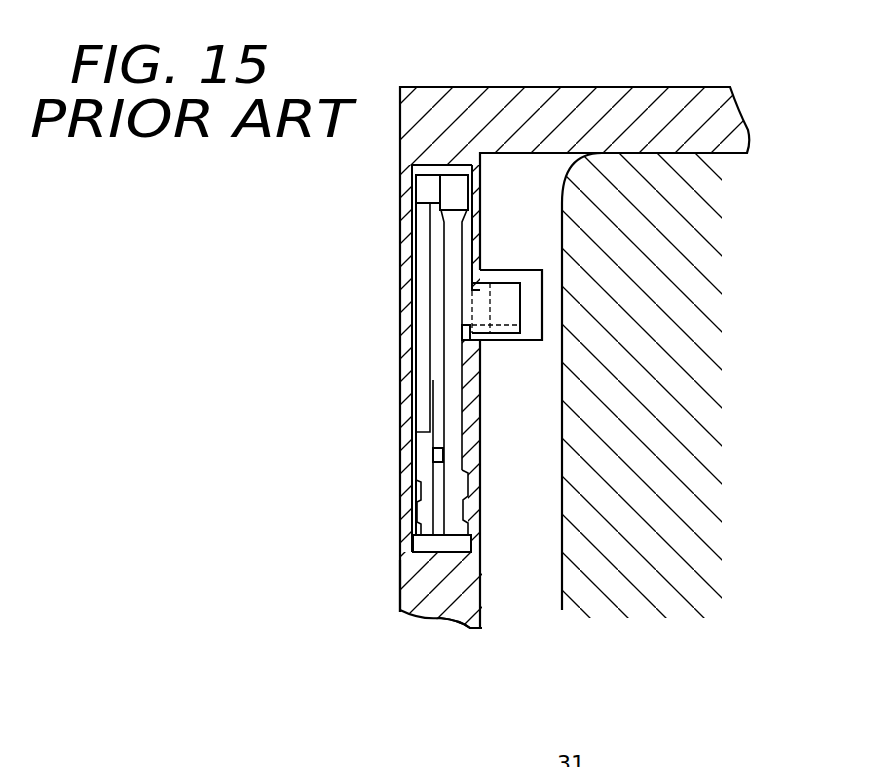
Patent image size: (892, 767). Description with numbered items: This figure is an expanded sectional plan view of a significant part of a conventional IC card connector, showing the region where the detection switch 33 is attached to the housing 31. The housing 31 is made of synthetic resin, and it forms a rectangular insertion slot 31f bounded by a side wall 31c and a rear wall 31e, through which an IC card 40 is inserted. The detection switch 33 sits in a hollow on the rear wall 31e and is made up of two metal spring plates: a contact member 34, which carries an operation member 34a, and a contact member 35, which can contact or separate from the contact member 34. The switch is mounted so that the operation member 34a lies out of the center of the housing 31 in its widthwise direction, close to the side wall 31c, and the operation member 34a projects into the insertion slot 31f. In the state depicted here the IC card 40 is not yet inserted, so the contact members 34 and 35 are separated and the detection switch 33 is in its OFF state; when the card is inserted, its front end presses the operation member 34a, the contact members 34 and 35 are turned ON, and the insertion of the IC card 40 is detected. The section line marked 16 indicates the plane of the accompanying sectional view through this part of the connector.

The housing 31 is at (565, 84).
The side wall 31c is at (647, 87).
The rear wall 31e is at (407, 572).
The insertion slot 31f is at (500, 583).
The detection switch 33 is at (413, 308).
The contact member 34 is at (458, 182).
The operation member 34a is at (507, 297).
The contact member 35 is at (427, 186).
The IC card 40 is at (708, 518).
The section line XVI-XVI 16 is at (408, 64).